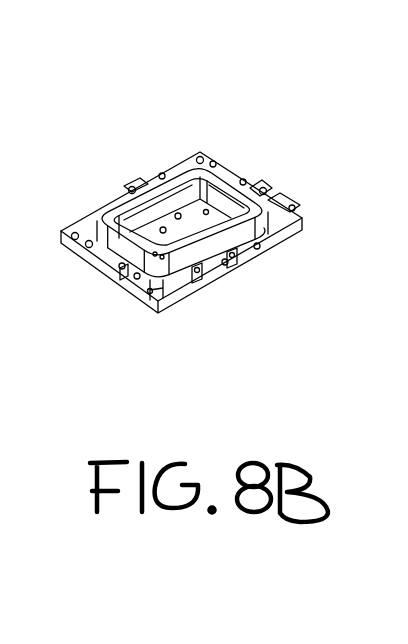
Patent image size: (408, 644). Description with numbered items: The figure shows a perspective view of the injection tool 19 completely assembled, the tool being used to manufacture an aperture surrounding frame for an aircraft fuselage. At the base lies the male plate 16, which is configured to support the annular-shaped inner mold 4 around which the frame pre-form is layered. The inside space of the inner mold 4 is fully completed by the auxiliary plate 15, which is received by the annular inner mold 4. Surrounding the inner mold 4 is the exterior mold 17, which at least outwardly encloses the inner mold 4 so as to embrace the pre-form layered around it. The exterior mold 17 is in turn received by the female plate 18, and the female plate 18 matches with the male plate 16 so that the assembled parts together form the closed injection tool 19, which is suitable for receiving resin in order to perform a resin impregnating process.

The inner mold 4 is at (203, 183).
The auxiliary plate 15 is at (163, 230).
The male plate 16 is at (150, 304).
The exterior mold 17 is at (263, 190).
The female plate 18 is at (179, 296).
The injection tool 19 is at (229, 98).